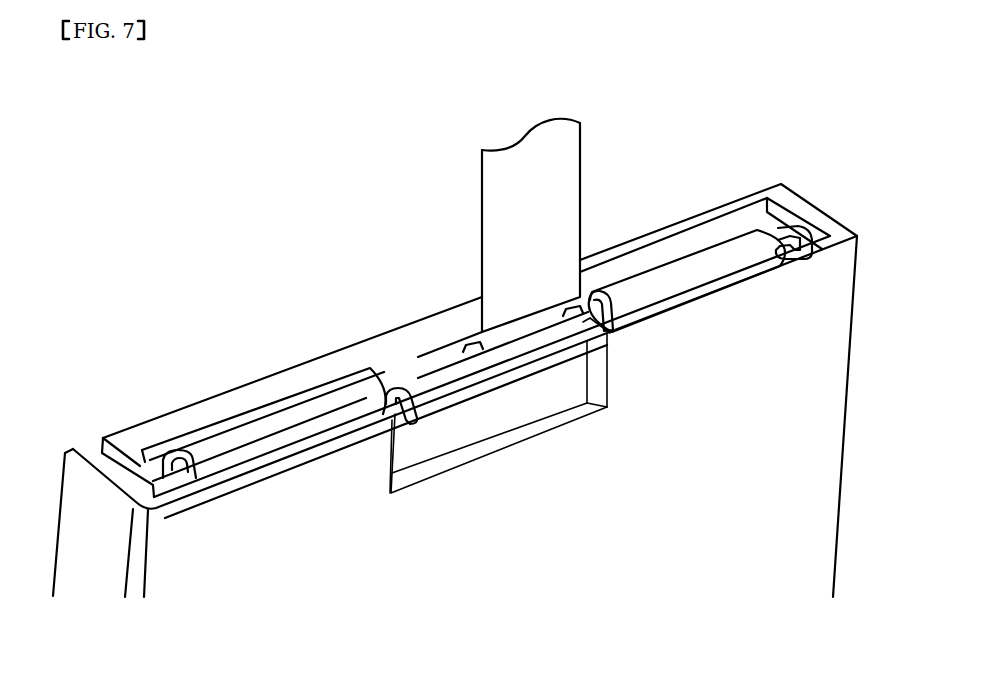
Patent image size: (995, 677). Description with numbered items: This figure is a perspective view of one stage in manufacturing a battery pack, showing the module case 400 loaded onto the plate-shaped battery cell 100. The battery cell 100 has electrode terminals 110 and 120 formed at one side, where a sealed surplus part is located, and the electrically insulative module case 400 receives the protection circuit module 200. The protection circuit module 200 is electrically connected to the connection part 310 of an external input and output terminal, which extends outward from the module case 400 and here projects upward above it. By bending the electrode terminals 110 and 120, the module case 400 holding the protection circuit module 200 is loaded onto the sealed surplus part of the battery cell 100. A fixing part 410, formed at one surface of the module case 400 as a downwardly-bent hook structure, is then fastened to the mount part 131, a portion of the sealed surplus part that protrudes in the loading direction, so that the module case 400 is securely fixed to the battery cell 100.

The battery cell 100 is at (715, 520).
The electrode terminal 110 is at (700, 275).
The electrode terminal 120 is at (287, 428).
The mount part 131 is at (483, 423).
The protection circuit module 200 is at (177, 455).
The connection part 310 is at (555, 207).
The module case 400 is at (350, 330).
The fixing part 410 is at (563, 407).